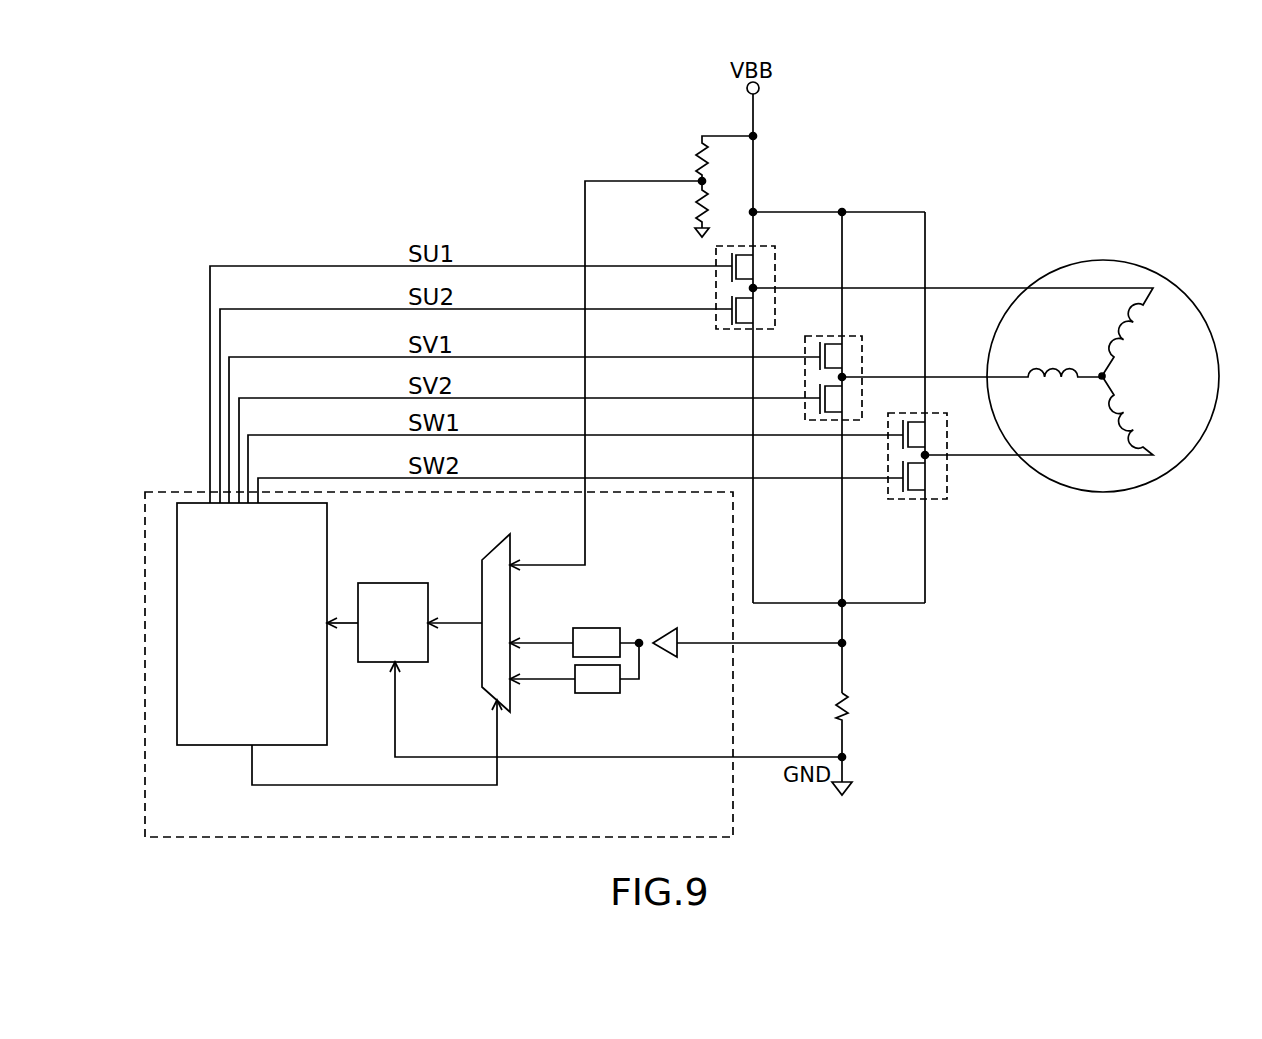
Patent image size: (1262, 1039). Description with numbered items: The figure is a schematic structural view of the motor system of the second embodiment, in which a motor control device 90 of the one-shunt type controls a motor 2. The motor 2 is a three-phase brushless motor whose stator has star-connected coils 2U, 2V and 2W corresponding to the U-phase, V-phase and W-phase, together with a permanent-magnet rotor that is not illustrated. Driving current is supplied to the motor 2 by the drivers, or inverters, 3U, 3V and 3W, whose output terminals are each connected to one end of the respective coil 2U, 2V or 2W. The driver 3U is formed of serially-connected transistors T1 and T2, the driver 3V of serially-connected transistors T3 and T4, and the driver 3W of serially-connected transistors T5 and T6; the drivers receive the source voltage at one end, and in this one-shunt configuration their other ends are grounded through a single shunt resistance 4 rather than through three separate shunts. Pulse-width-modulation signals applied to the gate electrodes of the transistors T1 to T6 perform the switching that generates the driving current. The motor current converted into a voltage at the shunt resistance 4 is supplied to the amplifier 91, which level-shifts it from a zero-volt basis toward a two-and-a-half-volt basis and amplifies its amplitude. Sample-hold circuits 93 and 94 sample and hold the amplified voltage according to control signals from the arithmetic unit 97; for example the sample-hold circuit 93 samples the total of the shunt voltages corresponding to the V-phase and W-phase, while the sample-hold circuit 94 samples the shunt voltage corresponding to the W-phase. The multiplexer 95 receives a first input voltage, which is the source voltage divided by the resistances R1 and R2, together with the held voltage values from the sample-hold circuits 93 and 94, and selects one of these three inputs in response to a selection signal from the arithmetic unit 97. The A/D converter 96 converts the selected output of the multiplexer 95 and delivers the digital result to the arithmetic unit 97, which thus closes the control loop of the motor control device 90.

The motor 2 is at (986, 356).
The coil 2U is at (966, 332).
The coil 2V is at (972, 353).
The coil 2W is at (1039, 415).
The driver 3U is at (751, 287).
The driver 3V is at (858, 361).
The driver 3W is at (940, 488).
The transistor T1 is at (728, 279).
The transistor T2 is at (728, 318).
The transistor T3 is at (845, 357).
The transistor T4 is at (845, 399).
The transistor T5 is at (930, 435).
The transistor T6 is at (930, 478).
The resistance R1 is at (724, 158).
The resistance R2 is at (719, 209).
The shunt resistance 4 is at (853, 725).
The motor control device 90 is at (735, 823).
The amplifier 91 is at (667, 631).
The sample-hold circuit 93 is at (600, 628).
The sample-hold circuit 94 is at (600, 693).
The multiplexer 95 is at (482, 670).
The A/D converter 96 is at (373, 662).
The arithmetic unit 97 is at (200, 745).